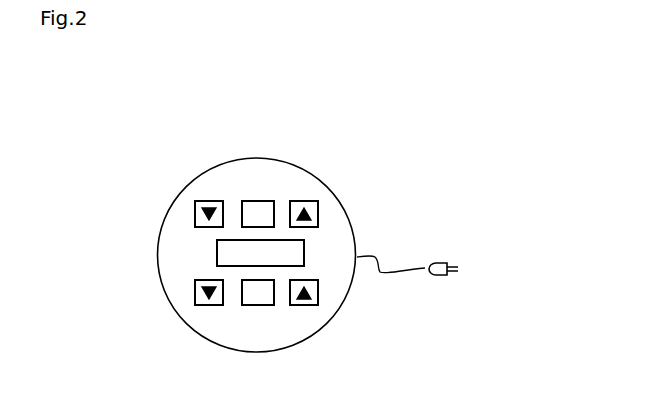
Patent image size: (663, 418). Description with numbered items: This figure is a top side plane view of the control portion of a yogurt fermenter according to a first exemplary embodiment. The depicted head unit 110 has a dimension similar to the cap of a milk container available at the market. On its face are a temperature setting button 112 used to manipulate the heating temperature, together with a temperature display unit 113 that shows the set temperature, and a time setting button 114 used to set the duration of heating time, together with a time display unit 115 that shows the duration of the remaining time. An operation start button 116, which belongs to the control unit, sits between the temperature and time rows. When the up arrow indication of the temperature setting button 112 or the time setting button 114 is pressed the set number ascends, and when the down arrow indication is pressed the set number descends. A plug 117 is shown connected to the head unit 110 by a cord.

The head unit 110 is at (341, 216).
The temperature setting button 112 is at (203, 201).
The temperature display unit 113 is at (256, 201).
The time setting button 114 is at (203, 305).
The time display unit 115 is at (245, 305).
The operation start button 116 is at (217, 252).
The plug 117 is at (438, 267).